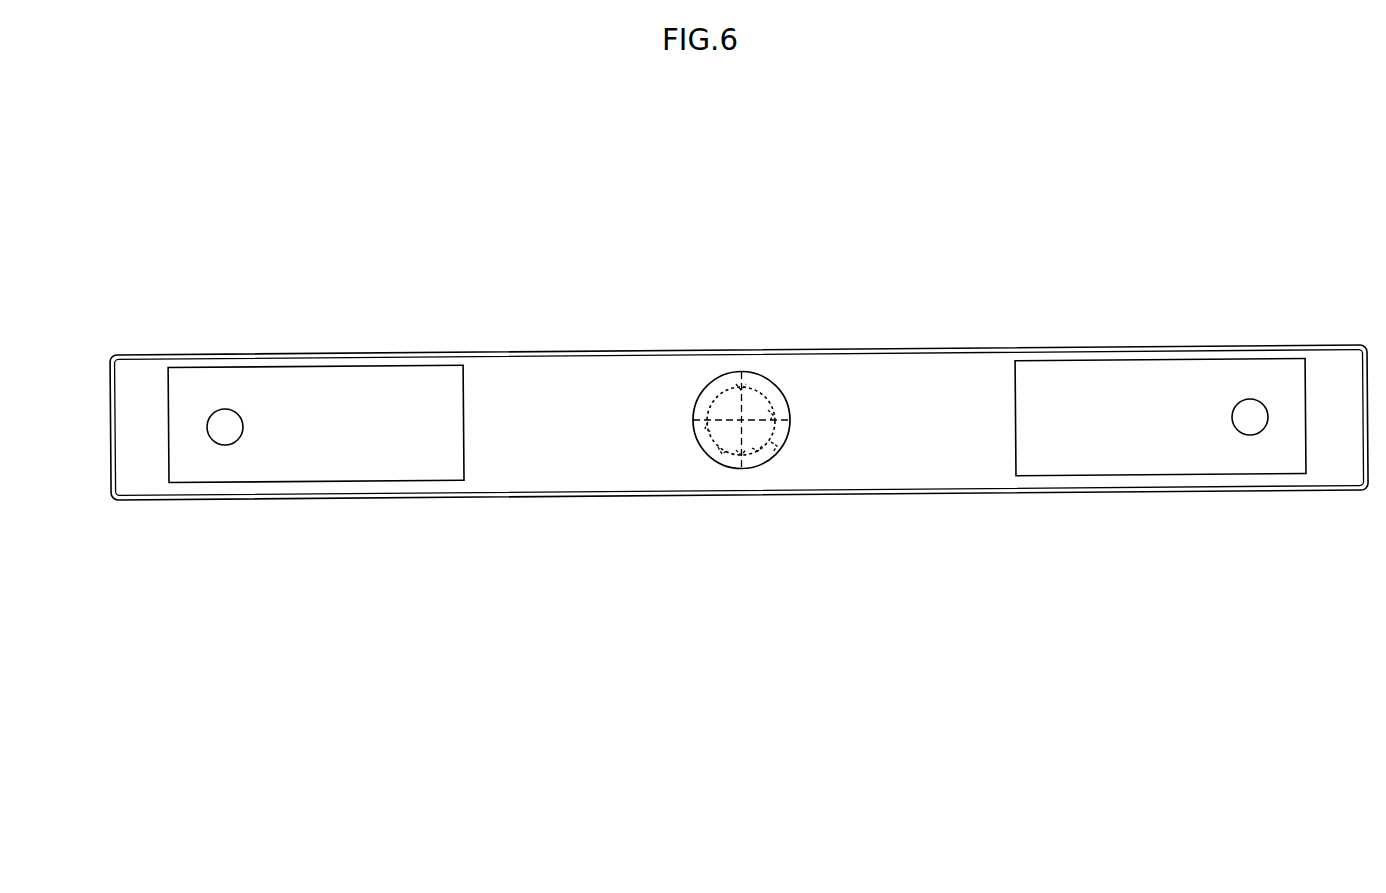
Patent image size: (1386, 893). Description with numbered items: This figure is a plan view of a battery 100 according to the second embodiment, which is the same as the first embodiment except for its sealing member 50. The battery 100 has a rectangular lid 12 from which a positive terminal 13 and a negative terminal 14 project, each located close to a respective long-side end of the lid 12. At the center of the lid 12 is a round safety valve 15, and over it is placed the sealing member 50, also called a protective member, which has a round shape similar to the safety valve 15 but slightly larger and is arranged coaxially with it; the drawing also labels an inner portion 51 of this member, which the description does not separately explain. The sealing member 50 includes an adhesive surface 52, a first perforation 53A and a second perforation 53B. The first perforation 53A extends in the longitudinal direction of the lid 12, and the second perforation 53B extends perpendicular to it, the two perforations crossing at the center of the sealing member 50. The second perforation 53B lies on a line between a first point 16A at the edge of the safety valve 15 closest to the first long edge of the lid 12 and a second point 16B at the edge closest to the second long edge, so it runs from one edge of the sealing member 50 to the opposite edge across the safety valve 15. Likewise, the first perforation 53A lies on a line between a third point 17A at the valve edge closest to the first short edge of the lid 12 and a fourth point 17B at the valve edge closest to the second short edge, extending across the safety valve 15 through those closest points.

The battery 100 is at (750, 250).
The lid 12 is at (938, 385).
The positive terminal 13 is at (1248, 388).
The negative terminal 14 is at (222, 395).
The safety valve 15 is at (723, 458).
The first point 16A is at (742, 387).
The second point 16B is at (740, 460).
The third point 17A is at (704, 428).
The fourth point 17B is at (773, 410).
The sealing member 50 is at (698, 385).
The inner member 51 is at (720, 413).
The adhesive surface 52 is at (721, 377).
The first perforation 53A is at (777, 445).
The second perforation 53B is at (758, 449).